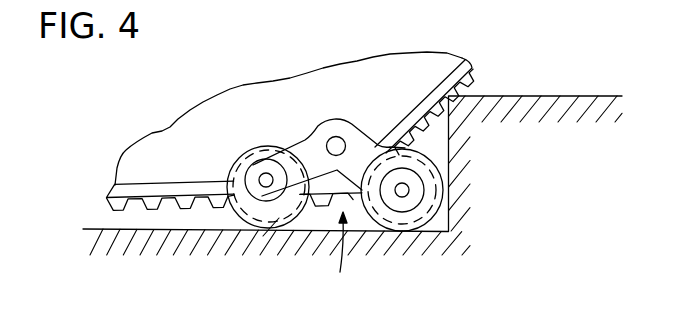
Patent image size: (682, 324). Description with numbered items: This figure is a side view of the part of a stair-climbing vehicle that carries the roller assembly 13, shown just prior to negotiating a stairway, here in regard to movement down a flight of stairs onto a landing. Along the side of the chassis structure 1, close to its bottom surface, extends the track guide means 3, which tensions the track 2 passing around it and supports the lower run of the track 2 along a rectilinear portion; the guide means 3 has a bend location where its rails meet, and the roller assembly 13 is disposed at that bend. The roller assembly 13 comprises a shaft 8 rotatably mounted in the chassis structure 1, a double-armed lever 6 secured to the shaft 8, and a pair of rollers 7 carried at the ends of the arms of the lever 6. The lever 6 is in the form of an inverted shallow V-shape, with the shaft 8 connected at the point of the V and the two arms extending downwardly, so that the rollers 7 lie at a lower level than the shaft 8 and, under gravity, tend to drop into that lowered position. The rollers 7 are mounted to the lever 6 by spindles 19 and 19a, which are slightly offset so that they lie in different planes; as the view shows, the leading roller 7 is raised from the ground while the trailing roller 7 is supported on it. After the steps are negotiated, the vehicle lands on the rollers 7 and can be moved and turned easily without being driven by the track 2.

The chassis structure 1 is at (167, 145).
The track 2 is at (106, 199).
The track guide means 3 is at (116, 192).
The double-armed lever 6 is at (300, 156).
The roller 7 is at (258, 208).
The shaft 8 is at (341, 137).
The roller assembly 13 is at (339, 255).
The spindle 19 is at (409, 190).
The spindle 19a is at (263, 176).